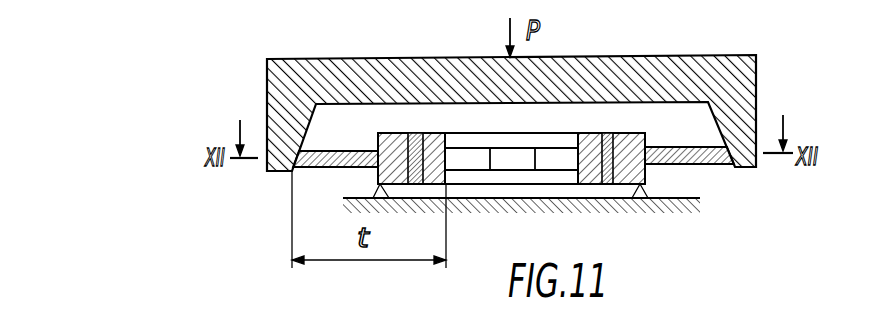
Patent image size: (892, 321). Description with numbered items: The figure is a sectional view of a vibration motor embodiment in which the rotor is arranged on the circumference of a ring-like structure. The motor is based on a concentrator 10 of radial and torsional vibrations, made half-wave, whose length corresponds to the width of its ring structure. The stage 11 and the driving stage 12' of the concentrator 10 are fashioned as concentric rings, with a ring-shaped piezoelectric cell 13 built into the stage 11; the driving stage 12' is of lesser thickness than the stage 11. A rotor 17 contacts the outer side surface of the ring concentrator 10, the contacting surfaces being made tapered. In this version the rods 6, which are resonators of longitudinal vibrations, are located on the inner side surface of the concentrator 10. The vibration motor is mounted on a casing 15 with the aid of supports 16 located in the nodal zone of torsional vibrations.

The rods 6 is at (552, 157).
The concentrator 10 is at (615, 118).
The stage 11 is at (632, 186).
The driving stage 12' is at (523, 179).
The piezoelectric cell 13 is at (612, 134).
The casing 15 is at (680, 206).
The supports 16 is at (378, 192).
The rotor 17 is at (742, 112).